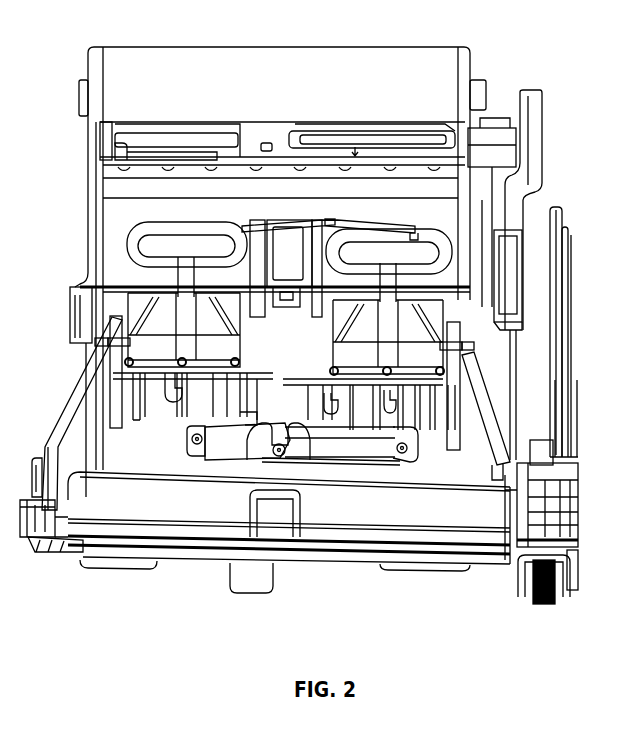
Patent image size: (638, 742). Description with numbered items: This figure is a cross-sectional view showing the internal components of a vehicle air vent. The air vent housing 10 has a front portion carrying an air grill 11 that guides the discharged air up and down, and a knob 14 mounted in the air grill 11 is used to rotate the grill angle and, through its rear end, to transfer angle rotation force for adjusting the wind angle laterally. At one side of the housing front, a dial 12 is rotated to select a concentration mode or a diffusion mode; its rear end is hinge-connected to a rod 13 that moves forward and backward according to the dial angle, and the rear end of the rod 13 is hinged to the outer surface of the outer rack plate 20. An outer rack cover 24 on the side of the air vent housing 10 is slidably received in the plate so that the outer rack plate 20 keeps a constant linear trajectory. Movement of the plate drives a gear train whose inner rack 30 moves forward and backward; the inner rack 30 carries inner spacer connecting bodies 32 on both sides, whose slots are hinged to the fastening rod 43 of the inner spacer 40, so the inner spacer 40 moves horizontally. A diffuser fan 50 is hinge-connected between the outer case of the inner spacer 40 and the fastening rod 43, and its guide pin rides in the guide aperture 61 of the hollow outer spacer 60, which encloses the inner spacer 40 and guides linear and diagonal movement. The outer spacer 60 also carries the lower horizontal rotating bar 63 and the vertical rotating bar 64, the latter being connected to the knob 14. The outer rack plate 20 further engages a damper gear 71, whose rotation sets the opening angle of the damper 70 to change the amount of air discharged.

The air vent housing 10 is at (487, 385).
The air grill 11 is at (137, 552).
The dial 12 is at (540, 610).
The rod 13 is at (567, 362).
The knob 14 is at (300, 458).
The outer rack plate 20 is at (542, 152).
The outer rack cover 24 is at (512, 263).
The inner rack 30 is at (278, 228).
The inner spacer connecting bodies 32 is at (133, 243).
The inner spacer 40 is at (406, 390).
The fastening rod 43 is at (182, 279).
The diffuser fan 50 is at (115, 347).
The outer spacer 60 is at (136, 420).
The guide aperture 61 is at (173, 398).
The lower horizontal rotating bar 63 is at (217, 442).
The vertical rotating bar 64 is at (278, 456).
The damper 70 is at (306, 126).
The damper gear 71 is at (503, 137).